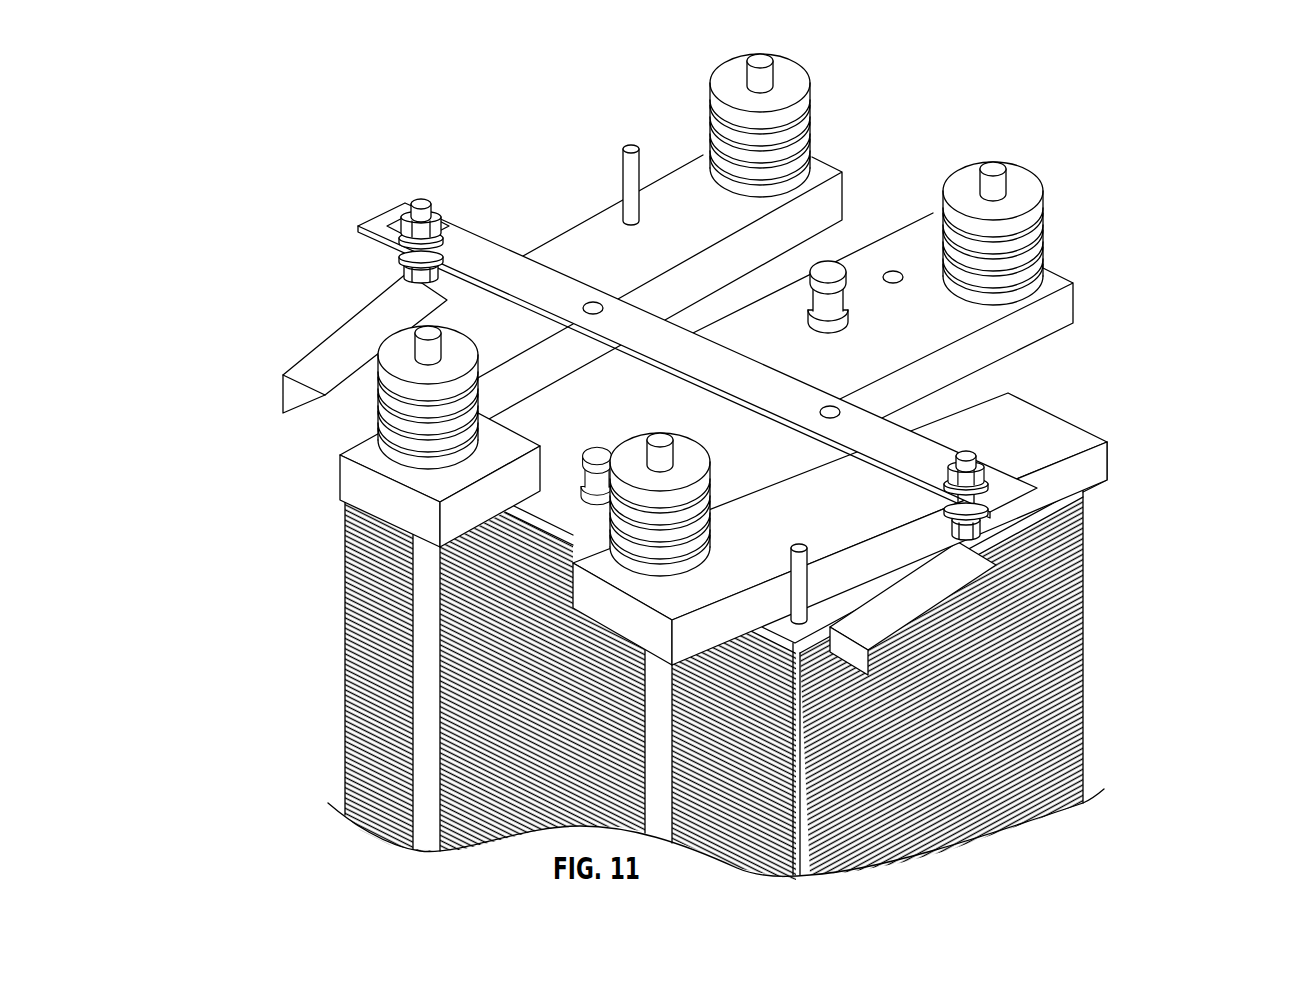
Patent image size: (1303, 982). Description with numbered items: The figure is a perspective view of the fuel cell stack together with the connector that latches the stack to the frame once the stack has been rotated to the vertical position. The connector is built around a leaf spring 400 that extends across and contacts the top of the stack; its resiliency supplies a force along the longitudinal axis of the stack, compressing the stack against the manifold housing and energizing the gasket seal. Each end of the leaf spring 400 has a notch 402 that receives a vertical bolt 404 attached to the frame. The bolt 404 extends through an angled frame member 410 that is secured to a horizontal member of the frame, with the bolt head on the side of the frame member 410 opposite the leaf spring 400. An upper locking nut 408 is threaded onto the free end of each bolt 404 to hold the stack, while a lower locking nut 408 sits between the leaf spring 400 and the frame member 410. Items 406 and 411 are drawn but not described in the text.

The leaf spring 400 is at (665, 236).
The notch 402 is at (807, 338).
The bolt 404 is at (731, 455).
The nut 406 is at (775, 326).
The locking nut 408 is at (737, 426).
The angled frame member 410 is at (303, 334).
The bracket flange 411 is at (267, 423).